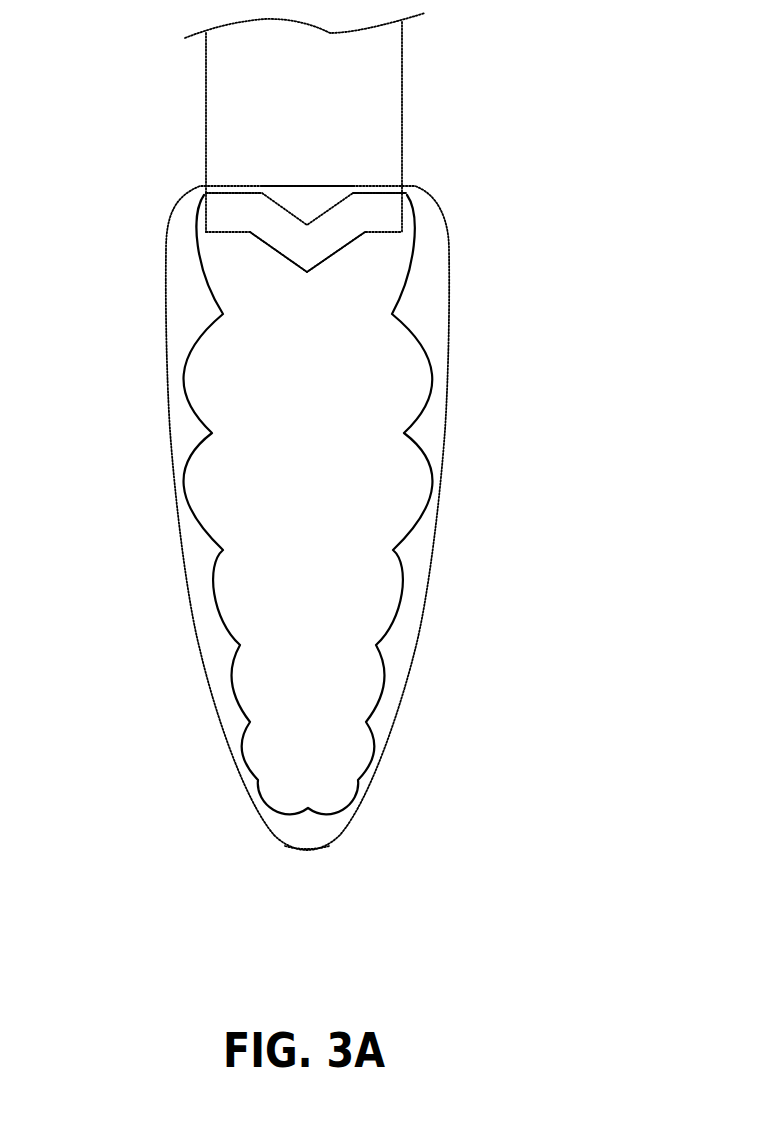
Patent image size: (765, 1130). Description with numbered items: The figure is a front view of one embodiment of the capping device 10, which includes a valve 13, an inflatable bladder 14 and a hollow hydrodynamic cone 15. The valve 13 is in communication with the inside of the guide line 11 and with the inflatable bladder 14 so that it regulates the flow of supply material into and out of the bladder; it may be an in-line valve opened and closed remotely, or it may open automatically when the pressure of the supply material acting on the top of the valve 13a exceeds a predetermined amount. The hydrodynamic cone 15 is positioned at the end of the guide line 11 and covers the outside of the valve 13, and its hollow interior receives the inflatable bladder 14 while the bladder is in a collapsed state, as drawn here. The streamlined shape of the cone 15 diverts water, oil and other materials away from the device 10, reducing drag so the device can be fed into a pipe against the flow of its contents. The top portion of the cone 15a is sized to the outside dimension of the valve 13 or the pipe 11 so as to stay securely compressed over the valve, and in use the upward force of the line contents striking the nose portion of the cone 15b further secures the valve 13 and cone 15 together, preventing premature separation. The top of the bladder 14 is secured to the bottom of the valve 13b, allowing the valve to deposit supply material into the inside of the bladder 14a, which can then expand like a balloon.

The capping device 10 is at (513, 270).
The guide line 11 is at (318, 109).
The valve 13 is at (257, 226).
The top of the valve 13a is at (238, 195).
The bottom of the valve 13b is at (287, 255).
The inflatable bladder 14 is at (400, 615).
The inside of the bladder 14a is at (325, 418).
The hollow hydrodynamic cone 15 is at (445, 443).
The top portion of the cone 15a is at (322, 185).
The nose portion of the cone 15b is at (308, 832).